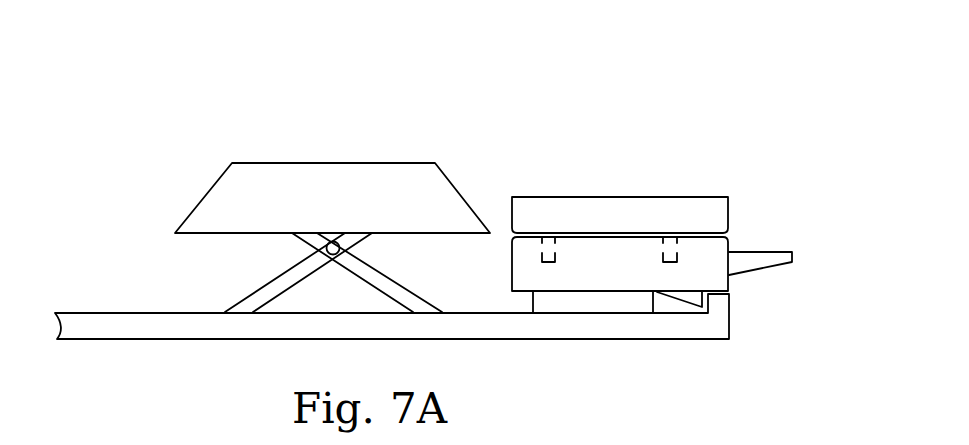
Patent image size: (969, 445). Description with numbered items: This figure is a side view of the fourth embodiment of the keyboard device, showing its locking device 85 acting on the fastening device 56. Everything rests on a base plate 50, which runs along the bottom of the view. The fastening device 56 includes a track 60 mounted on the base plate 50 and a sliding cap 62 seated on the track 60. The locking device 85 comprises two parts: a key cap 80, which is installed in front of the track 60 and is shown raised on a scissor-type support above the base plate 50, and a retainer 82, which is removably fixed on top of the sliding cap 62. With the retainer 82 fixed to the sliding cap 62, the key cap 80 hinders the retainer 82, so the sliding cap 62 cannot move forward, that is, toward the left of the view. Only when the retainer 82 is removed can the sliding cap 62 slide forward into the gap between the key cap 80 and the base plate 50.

The base plate 50 is at (110, 325).
The fastening device 56 is at (683, 217).
The track 60 is at (610, 298).
The sliding cap 62 is at (712, 246).
The key cap 80 is at (332, 187).
The retainer 82 is at (565, 213).
The locking device 85 is at (363, 165).